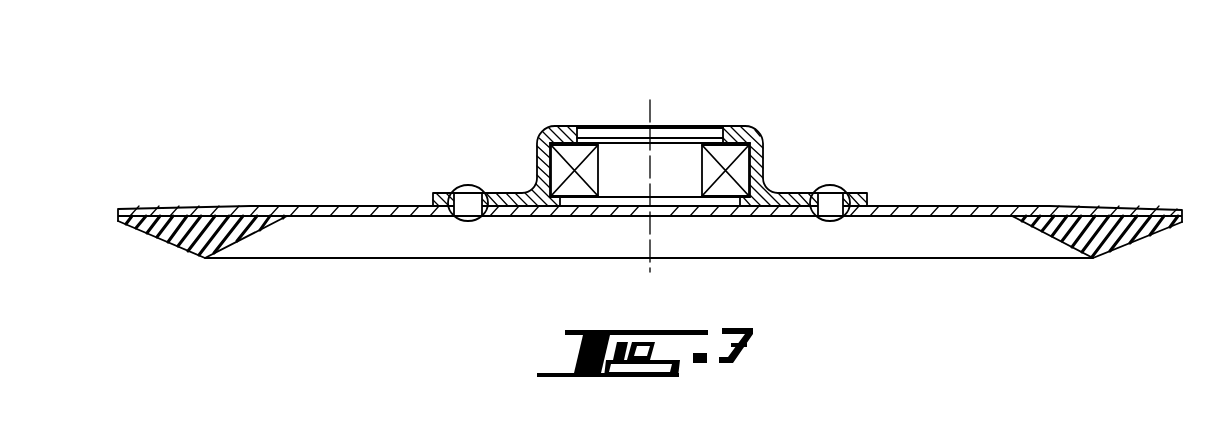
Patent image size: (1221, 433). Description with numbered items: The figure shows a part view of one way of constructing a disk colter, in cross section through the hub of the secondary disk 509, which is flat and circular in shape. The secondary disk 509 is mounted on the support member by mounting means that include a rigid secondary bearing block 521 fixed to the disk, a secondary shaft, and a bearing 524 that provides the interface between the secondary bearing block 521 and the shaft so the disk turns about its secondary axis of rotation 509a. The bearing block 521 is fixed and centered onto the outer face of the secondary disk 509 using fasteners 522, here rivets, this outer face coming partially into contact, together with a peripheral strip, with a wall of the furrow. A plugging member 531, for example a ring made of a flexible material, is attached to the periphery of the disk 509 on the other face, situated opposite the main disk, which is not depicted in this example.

The secondary disk 509 is at (1075, 165).
The secondary axis of rotation 509a is at (653, 137).
The secondary bearing block 521 is at (767, 137).
The screws 522 is at (472, 186).
The bearing 524 is at (584, 150).
The plugging member 531 is at (1123, 255).